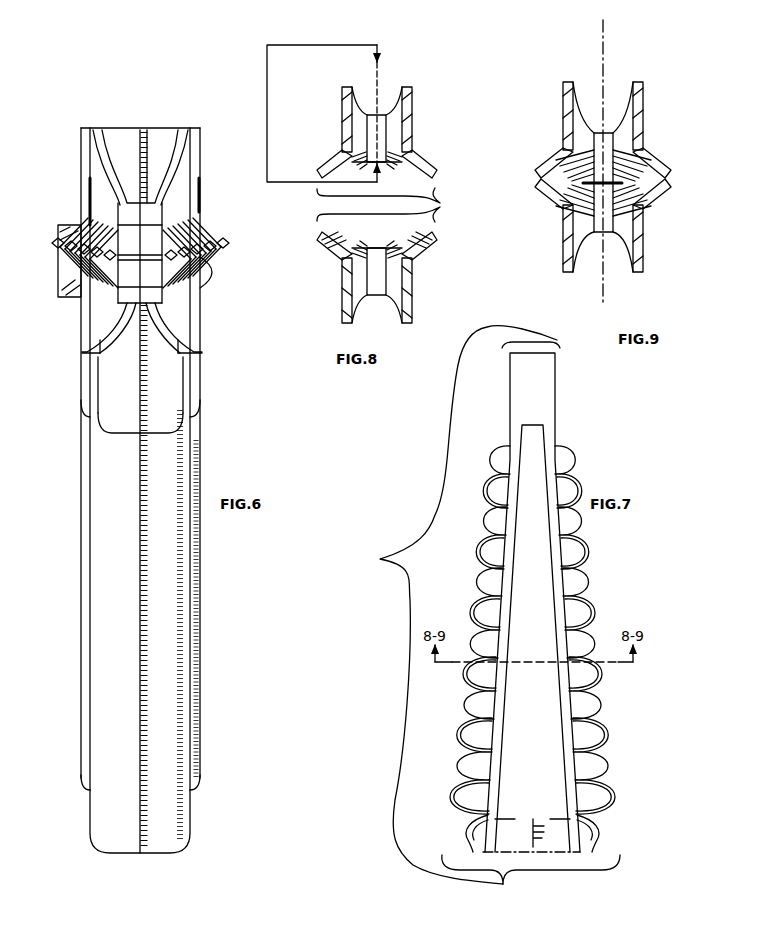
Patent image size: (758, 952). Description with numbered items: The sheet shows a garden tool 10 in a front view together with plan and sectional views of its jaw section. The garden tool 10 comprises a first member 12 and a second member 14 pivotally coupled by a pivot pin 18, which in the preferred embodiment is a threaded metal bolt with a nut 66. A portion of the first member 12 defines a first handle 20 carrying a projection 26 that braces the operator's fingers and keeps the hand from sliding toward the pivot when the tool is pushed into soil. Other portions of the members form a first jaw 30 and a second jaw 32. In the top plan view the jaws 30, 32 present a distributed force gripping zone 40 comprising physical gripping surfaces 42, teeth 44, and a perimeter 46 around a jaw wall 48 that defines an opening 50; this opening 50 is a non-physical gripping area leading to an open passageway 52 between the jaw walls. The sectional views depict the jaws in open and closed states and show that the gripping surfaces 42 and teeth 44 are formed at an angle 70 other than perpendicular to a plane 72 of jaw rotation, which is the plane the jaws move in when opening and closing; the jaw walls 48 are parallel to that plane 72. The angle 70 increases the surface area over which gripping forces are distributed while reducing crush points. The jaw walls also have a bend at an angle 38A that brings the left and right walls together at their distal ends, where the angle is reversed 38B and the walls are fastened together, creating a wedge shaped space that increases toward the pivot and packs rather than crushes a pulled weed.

In FIG. 6, the garden tool 10 is at (257, 383).
In FIG. 6, the first member 12 is at (200, 823).
In FIG. 6, the second member 14 is at (210, 765).
In FIG. 6, the pivot pin 18 is at (210, 280).
In FIG. 6, the first handle 20 is at (152, 560).
In FIG. 6, the projection 26 is at (152, 405).
In FIG. 6, the first jaw 30 is at (182, 163).
In FIG. 8, the first jaw 30 is at (540, 93).
In FIG. 7, the first jaw 30 is at (578, 842).
In FIG. 6, the second jaw 32 is at (190, 337).
In FIG. 8, the second jaw 32 is at (549, 272).
In FIG. 7, the second jaw 32 is at (592, 842).
In FIG. 7, the angle 38A is at (565, 830).
In FIG. 7, the reversed angle 38B is at (560, 414).
In FIG. 8, the distributed force gripping zone 40 is at (388, 205).
In FIG. 7, the distributed force gripping zone 40 is at (488, 605).
In FIG. 8, the gripping surfaces 42 is at (395, 231).
In FIG. 7, the gripping surfaces 42 is at (572, 595).
In FIG. 6, the teeth 44 is at (227, 250).
In FIG. 8, the teeth 44 is at (319, 249).
In FIG. 7, the teeth 44 is at (487, 582).
In FIG. 9, the perimeter 46 is at (588, 82).
In FIG. 7, the perimeter 46 is at (555, 608).
In FIG. 9, the jaw wall 48 is at (630, 230).
In FIG. 7, the jaw wall 48 is at (554, 650).
In FIG. 8, the opening 50 is at (386, 84).
In FIG. 7, the opening 50 is at (546, 700).
In FIG. 8, the open passageway 52 is at (316, 113).
In FIG. 6, the nut 66 is at (63, 273).
In FIG. 9, the angle 70 is at (560, 134).
In FIG. 9, the plane of jaw rotation 72 is at (600, 33).